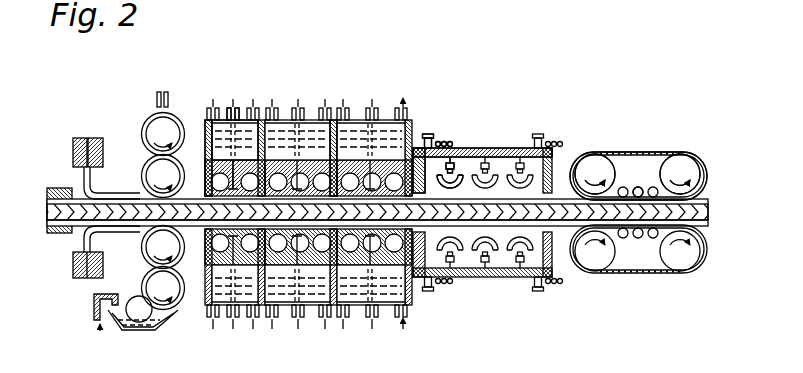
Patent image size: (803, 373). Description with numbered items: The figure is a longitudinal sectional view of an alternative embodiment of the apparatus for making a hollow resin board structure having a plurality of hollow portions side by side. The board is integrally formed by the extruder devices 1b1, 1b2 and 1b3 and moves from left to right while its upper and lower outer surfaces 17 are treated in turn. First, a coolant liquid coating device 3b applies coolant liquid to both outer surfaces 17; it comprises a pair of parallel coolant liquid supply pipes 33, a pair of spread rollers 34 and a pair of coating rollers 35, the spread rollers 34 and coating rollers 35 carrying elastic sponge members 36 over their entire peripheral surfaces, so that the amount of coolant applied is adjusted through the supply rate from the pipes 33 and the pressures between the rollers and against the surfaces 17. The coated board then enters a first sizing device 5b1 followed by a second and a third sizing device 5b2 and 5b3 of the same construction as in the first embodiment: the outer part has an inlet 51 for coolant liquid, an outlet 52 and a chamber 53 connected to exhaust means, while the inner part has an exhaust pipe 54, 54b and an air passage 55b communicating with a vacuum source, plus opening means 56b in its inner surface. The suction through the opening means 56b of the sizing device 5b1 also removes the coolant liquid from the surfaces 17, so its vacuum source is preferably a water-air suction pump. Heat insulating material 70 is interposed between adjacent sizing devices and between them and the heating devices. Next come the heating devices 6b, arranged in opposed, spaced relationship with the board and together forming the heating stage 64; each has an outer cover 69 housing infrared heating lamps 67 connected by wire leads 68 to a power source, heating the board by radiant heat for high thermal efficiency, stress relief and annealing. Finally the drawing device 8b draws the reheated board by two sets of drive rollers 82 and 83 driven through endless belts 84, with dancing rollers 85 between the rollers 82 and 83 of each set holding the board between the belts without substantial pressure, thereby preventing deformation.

The extruder device 1b1 is at (52, 134).
The extruder device 1b2 is at (92, 135).
The extruder device 1b3 is at (78, 284).
The coolant liquid coating device 3b is at (128, 189).
The coolant liquid supply pipes 33 is at (168, 94).
The spread rollers 34 is at (146, 191).
The coating rollers 35 is at (148, 180).
The elastic sponge members 36 is at (150, 128).
The outer surfaces 17 is at (192, 196).
The duct 55b is at (137, 227).
The opening means 56b is at (208, 228).
The exhaust pipe 54 is at (323, 164).
The sizing device 5b1 is at (251, 174).
The sizing device 5b2 is at (301, 71).
The sizing device 5b3 is at (378, 71).
The inlet 51 is at (223, 107).
The outlet 52 is at (243, 108).
The chamber 53 is at (235, 140).
The distribution pipe 54b is at (235, 108).
The heat insulating material 70 is at (333, 140).
The burner unit 64 is at (488, 145).
The heating devices 6b is at (488, 177).
The burner 67 is at (461, 166).
The wire leads 68 is at (450, 134).
The outer cover 69 is at (492, 149).
The drawing device 8b is at (647, 168).
The drive rollers 82 is at (597, 163).
The drive rollers 83 is at (690, 168).
The endless belts 84 is at (638, 152).
The dancing rollers 85 is at (638, 187).